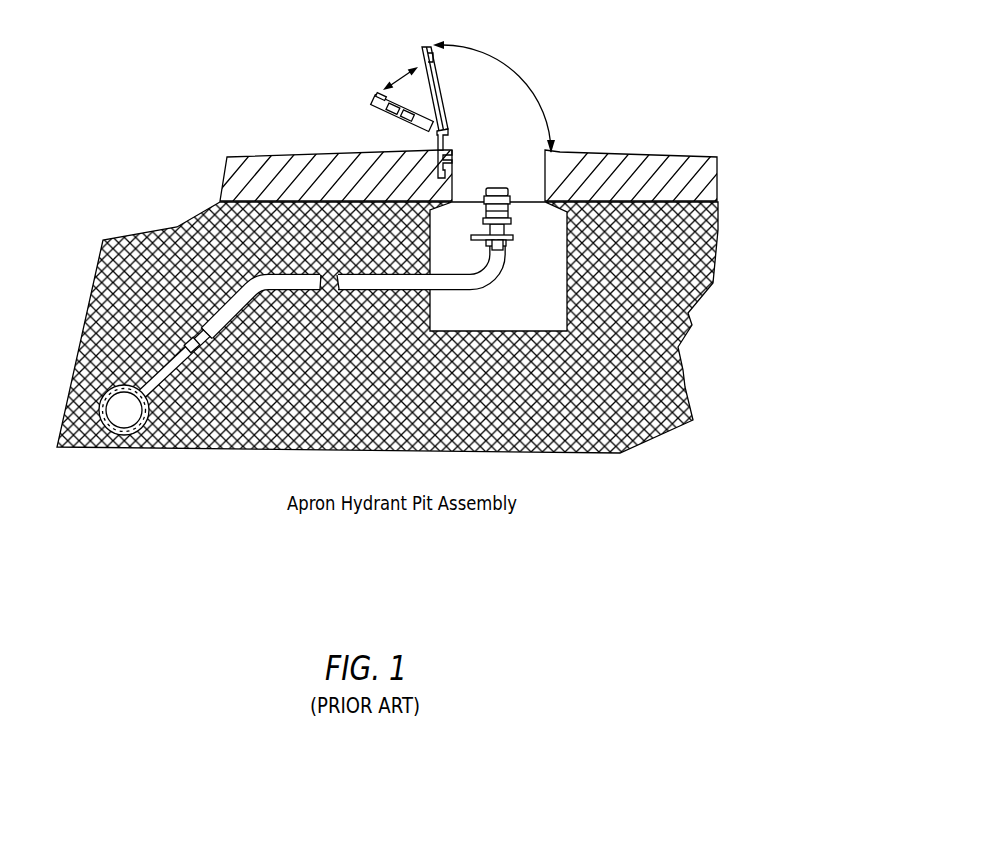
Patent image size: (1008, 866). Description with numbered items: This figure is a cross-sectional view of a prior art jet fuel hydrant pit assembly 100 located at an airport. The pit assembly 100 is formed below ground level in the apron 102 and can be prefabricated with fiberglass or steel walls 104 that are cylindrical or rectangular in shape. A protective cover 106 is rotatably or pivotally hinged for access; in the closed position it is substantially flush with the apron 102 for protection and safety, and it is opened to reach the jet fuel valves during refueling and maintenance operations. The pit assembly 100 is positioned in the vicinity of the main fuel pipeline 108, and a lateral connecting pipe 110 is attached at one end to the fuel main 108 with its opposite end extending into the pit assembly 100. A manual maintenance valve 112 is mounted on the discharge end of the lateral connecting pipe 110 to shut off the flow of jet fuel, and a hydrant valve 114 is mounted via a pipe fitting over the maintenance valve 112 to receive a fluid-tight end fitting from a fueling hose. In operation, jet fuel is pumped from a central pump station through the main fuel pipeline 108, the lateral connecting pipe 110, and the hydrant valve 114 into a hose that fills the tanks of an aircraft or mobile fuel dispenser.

The jet fuel hydrant pit assembly 100 is at (641, 111).
The apron 102 is at (275, 155).
The walls 104 is at (567, 328).
The protective cover 106 is at (378, 64).
The main fuel pipeline 108 is at (99, 399).
The lateral connecting pipe 110 is at (207, 318).
The manual maintenance valve 112 is at (503, 240).
The hydrant valve 114 is at (507, 194).